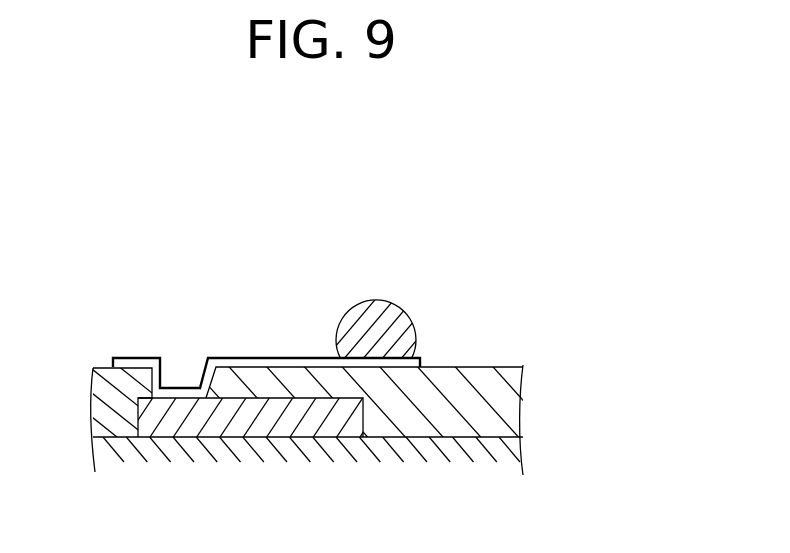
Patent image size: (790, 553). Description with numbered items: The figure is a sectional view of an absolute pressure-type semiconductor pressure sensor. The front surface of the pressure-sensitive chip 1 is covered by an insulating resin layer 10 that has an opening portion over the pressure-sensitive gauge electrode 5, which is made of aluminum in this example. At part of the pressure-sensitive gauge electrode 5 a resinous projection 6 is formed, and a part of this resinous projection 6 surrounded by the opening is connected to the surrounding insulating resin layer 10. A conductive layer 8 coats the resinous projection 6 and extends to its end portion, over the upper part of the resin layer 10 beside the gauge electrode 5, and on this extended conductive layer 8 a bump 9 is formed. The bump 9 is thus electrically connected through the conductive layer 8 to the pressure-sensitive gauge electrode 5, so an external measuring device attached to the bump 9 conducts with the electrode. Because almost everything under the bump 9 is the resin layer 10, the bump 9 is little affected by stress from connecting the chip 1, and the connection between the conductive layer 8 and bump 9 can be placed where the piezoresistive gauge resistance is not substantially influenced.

The pressure-sensitive chip 1 is at (525, 450).
The pressure-sensitive gauge electrode 5 is at (177, 428).
The resinous projection 6 is at (260, 380).
The conductive layer 8 is at (127, 355).
The bump 9 is at (395, 303).
The insulating resin layer 10 is at (480, 377).